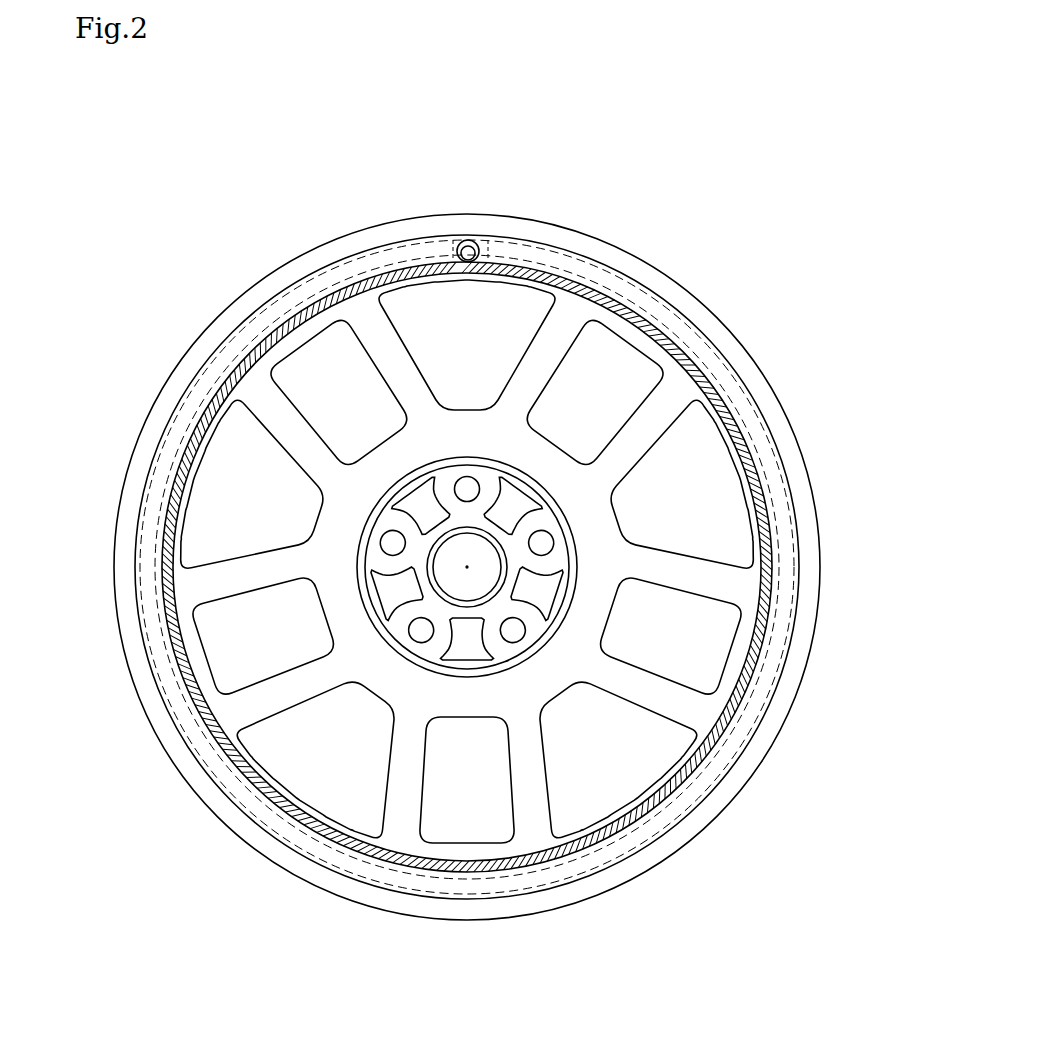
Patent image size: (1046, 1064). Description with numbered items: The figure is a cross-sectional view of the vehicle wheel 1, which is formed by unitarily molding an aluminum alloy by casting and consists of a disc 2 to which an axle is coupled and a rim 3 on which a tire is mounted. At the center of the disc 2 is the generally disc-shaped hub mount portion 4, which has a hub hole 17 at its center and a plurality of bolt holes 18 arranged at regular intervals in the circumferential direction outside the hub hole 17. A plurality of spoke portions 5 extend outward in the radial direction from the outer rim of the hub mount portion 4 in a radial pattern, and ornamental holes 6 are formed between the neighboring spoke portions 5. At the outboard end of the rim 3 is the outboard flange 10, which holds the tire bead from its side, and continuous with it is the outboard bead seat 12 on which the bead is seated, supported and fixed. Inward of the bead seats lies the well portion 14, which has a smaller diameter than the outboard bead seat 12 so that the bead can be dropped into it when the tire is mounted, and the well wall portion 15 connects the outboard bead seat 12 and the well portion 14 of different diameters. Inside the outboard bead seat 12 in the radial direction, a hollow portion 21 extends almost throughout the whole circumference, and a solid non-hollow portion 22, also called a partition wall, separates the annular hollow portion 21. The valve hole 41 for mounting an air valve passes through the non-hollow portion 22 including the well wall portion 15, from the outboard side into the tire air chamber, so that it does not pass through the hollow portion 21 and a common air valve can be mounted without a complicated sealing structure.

The vehicle wheel 1 is at (707, 132).
The disc 2 is at (227, 630).
The rim 3 is at (770, 392).
The hub mount portion 4 is at (440, 635).
The spoke portions 5 is at (305, 377).
The ornamental holes 6 is at (507, 307).
The outboard flange 10 is at (760, 768).
The outboard bead seat 12 is at (778, 692).
The well portion 14 is at (640, 312).
The well wall portion 15 is at (310, 277).
The hub hole 17 is at (478, 595).
The bolt holes 18 is at (543, 541).
The hollow portion 21 is at (553, 263).
The non-hollow portion 22 is at (473, 237).
The valve hole 41 is at (458, 248).